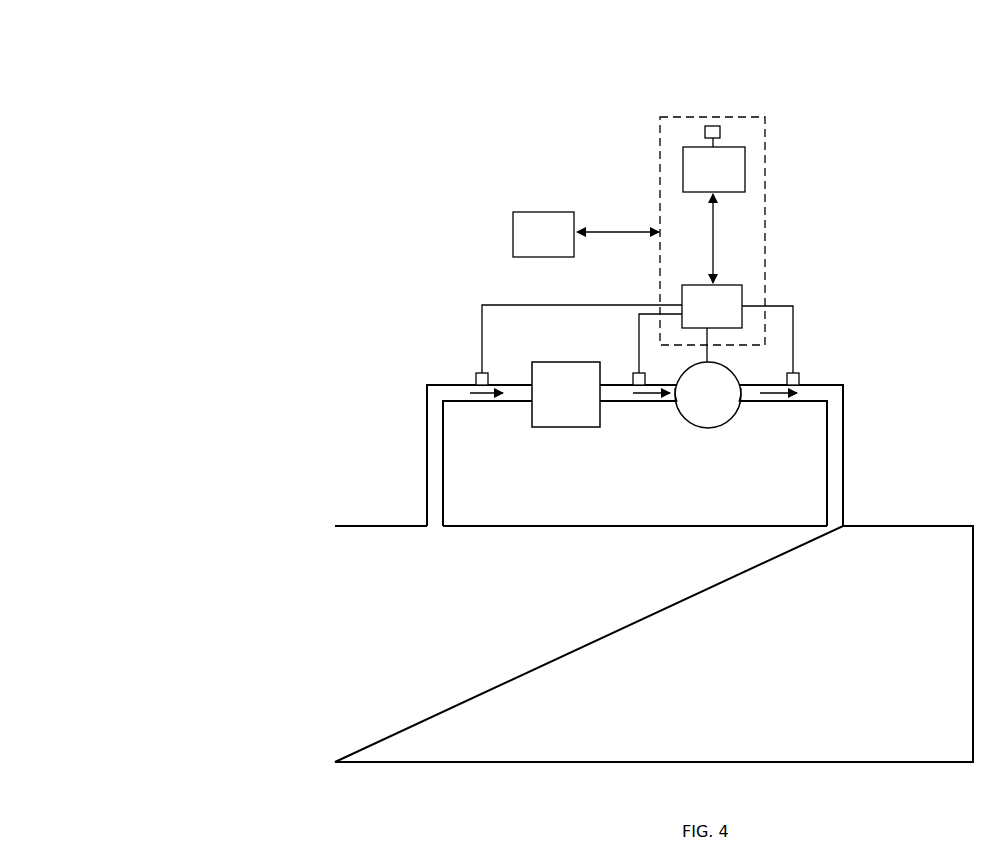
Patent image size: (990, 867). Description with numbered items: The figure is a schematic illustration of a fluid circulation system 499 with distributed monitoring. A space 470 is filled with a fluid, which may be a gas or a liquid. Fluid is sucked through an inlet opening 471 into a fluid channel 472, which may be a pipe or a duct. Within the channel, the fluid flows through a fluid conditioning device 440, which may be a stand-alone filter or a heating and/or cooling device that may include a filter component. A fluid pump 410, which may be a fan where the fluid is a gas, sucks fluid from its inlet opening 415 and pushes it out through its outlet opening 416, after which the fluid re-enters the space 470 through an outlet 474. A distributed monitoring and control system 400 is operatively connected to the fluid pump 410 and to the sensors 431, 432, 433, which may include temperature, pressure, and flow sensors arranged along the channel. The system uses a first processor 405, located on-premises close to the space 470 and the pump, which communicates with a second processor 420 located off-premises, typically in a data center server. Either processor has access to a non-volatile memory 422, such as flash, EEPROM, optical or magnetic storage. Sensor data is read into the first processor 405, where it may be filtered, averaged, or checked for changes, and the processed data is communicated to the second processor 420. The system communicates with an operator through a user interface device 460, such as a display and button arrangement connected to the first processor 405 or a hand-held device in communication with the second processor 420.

The distributed monitoring and control system 400 is at (660, 182).
The first processor 405 is at (728, 296).
The fluid pump 410 is at (700, 418).
The inlet opening 415 is at (673, 396).
The outlet opening 416 is at (740, 394).
The second processor 420 is at (723, 175).
The non-volatile memory 422 is at (712, 128).
The sensor 431 is at (478, 374).
The sensor 432 is at (636, 374).
The sensor 433 is at (798, 374).
The fluid conditioning device 440 is at (562, 417).
The user interface device 460 is at (537, 231).
The space 470 is at (356, 655).
The inlet opening 471 is at (433, 525).
The fluid channel 472 is at (436, 456).
The outlet 474 is at (835, 523).
The fluid circulation system 499 is at (212, 322).